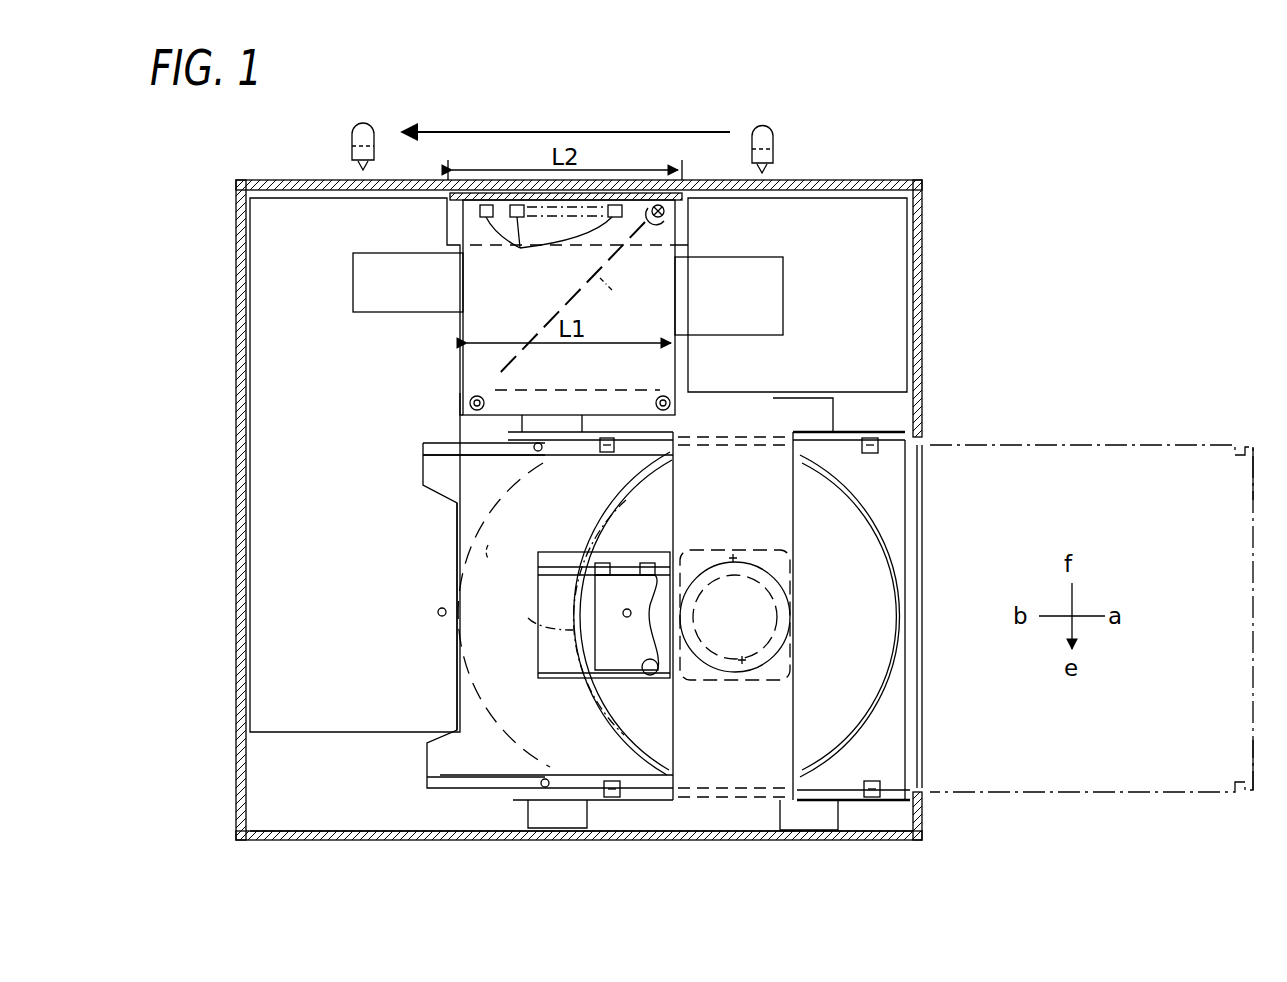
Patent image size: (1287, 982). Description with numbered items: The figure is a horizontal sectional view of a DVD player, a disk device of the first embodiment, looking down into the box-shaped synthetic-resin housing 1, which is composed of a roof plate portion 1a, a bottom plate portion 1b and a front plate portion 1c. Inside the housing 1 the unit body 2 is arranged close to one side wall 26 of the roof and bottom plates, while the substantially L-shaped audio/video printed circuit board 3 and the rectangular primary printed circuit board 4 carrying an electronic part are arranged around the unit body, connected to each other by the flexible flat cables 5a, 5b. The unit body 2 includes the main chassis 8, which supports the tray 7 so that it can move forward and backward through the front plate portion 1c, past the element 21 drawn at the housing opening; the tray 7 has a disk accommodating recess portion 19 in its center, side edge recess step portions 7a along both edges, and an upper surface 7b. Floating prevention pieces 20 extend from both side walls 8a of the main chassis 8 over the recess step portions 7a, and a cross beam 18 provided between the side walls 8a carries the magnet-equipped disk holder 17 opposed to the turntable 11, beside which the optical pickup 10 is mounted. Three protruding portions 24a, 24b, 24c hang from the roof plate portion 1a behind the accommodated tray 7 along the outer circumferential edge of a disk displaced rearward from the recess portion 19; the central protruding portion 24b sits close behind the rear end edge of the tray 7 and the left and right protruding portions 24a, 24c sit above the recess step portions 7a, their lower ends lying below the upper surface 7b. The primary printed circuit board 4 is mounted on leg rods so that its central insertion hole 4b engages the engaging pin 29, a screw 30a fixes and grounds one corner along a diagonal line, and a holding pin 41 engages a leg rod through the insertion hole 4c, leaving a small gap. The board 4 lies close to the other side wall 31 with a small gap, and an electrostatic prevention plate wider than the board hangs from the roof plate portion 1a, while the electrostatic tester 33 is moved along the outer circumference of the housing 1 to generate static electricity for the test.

The housing 1 is at (926, 228).
The roof plate portion 1a is at (311, 845).
The bottom plate portion 1b is at (579, 835).
The front plate portion 1c is at (921, 326).
The unit body 2 is at (410, 450).
The audio/video printed circuit board 3 is at (882, 276).
The primary printed circuit board 4 is at (470, 325).
The central insertion hole 4b is at (660, 397).
The insertion hole 4c is at (493, 402).
The flexible flat cable 5a is at (757, 297).
The flexible flat cable 5b is at (365, 281).
The tray 7 is at (932, 743).
The side edge recess step portion 7a is at (570, 450).
The upper surface of the tray 7b is at (473, 508).
The main chassis 8 is at (678, 806).
The side wall 8a is at (847, 432).
The optical pickup 10 is at (625, 650).
The turntable 11 is at (740, 662).
The disk holder 17 is at (733, 558).
The cross beam 18 is at (778, 535).
The disk accommodating recess portion 19 is at (603, 716).
The floating prevention piece 20 is at (870, 438).
The tray support 21 is at (931, 440).
The protruding portion 24a is at (536, 448).
The central protruding portion 24b is at (440, 612).
The protruding portion 24c is at (542, 782).
The side wall 26 is at (460, 843).
The engaging pin 29 is at (669, 405).
The screw 30a is at (668, 215).
The other side wall 31 is at (843, 186).
The electrostatic tester 33 is at (776, 152).
The holding pin 41 is at (470, 403).